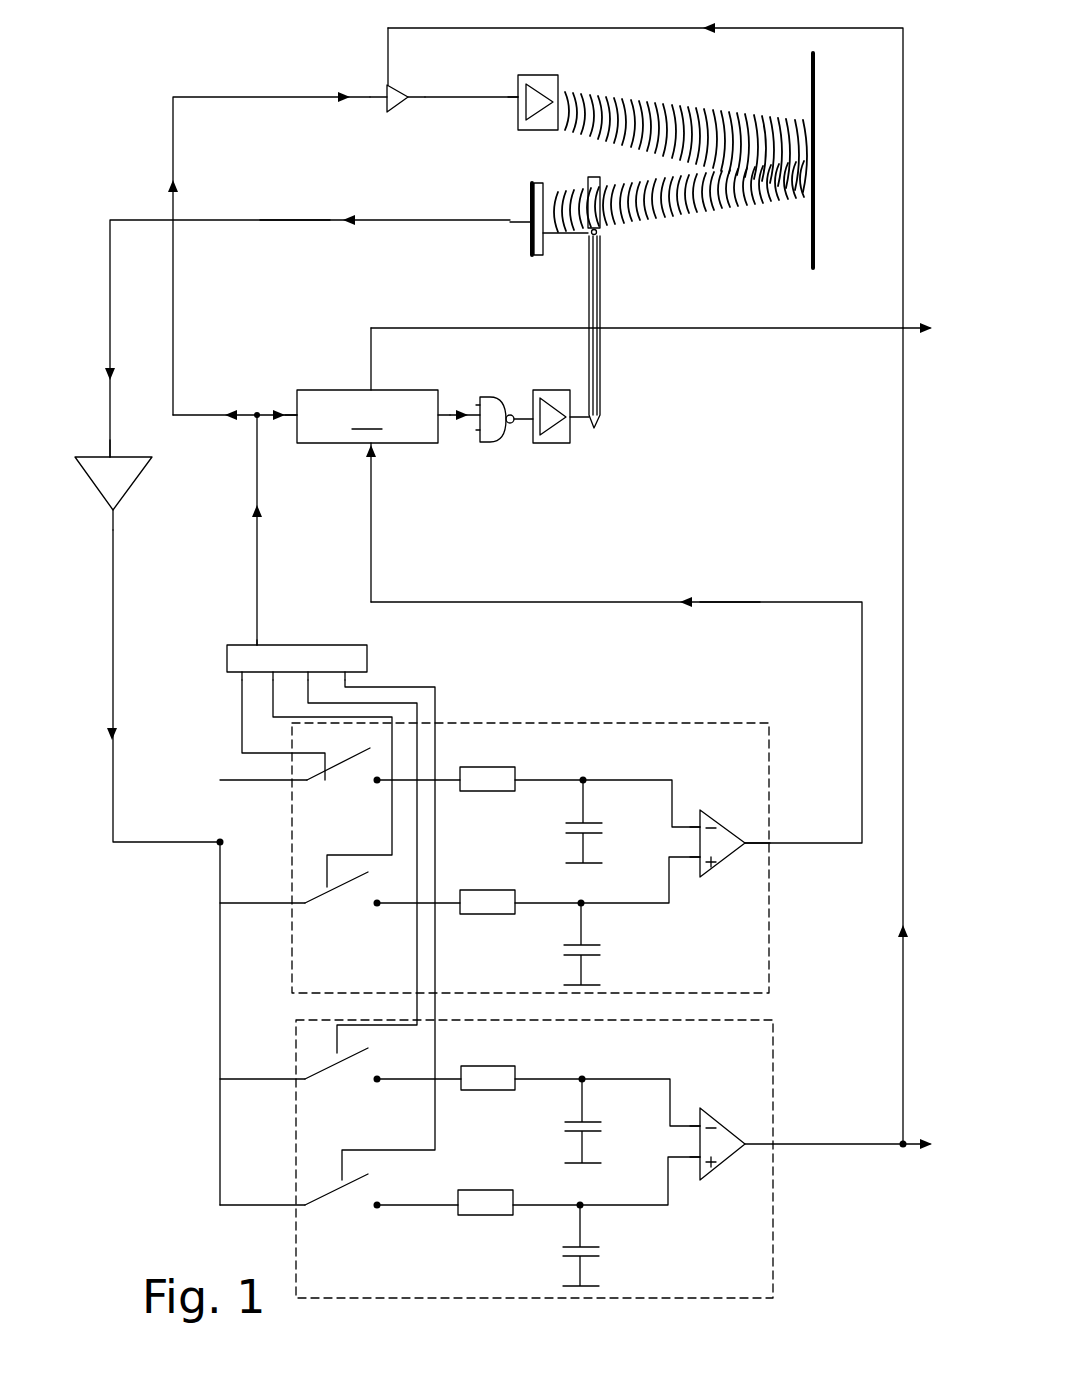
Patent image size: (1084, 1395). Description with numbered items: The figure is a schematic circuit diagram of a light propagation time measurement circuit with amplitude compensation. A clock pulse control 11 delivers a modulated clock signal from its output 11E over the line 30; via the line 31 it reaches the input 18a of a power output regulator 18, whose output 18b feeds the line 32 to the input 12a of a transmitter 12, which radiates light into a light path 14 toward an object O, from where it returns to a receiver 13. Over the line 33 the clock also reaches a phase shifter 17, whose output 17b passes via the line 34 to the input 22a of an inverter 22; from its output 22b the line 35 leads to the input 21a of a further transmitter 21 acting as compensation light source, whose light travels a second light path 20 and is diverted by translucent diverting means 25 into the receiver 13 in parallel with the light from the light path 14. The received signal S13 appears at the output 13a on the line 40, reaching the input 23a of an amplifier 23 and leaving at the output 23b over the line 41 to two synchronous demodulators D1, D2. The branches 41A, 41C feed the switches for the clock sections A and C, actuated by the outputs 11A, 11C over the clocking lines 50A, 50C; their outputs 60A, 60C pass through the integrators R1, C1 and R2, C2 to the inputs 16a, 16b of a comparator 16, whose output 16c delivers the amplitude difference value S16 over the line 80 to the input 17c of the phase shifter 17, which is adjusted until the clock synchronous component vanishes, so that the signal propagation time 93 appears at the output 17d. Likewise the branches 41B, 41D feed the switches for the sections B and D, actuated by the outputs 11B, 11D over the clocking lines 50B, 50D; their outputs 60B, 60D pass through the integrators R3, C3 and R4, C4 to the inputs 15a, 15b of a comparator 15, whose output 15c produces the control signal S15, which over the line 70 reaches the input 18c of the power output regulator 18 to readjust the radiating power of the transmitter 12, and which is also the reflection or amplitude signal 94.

The clock pulse control 11 is at (368, 660).
The output of the clock pulse control 11A is at (227, 660).
The output of the clock pulse control 11B is at (318, 665).
The output of the clock pulse control 11C is at (272, 675).
The output of the clock pulse control 11D is at (365, 672).
The output of the clock pulse control 11E is at (283, 645).
The transmitter 12 is at (548, 86).
The input of the transmitter 12a is at (512, 100).
The receiver 13 is at (531, 186).
The output of the receiver 13a is at (530, 222).
The light path 14 is at (688, 110).
The comparator 15 is at (725, 1135).
The input of the comparator 15a is at (700, 1108).
The input of the comparator 15b is at (700, 1168).
The output of the comparator 15c is at (750, 1143).
The comparator 16 is at (725, 835).
The input of the comparator 16a is at (700, 815).
The input of the comparator 16b is at (700, 868).
The output of the comparator 16c is at (750, 848).
The phase shifter 17 is at (297, 400).
The output of the phase shifter 17b is at (440, 425).
The input of the phase shifter 17c is at (378, 450).
The output of the phase shifter 17d is at (371, 385).
The power output regulator 18 is at (395, 85).
The input of the power output regulator 18a is at (386, 96).
The output of the power output regulator 18b is at (412, 104).
The input of the power output regulator 18c is at (388, 84).
The second light path 20 is at (588, 430).
The further transmitter 21 is at (550, 445).
The input of the further transmitter 21a is at (522, 425).
The inverter 22 is at (495, 397).
The input of the inverter 22a is at (480, 400).
The output of the inverter 22b is at (490, 440).
The amplifier 23 is at (135, 467).
The input of the amplifier 23a is at (112, 445).
The output of the amplifier 23b is at (115, 515).
The diverting means 25 is at (602, 270).
The line 30 is at (258, 485).
The line 31 is at (257, 100).
The line 32 is at (465, 97).
The line 33 is at (270, 413).
The line 34 is at (455, 412).
The line 35 is at (512, 412).
The line 40 is at (320, 220).
The line 41 is at (135, 840).
The line 41A is at (232, 782).
The line 41B is at (232, 1080).
The line 41C is at (232, 905).
The line 41D is at (232, 1205).
The clocking line 50A is at (242, 745).
The clocking line 50B is at (400, 1025).
The clocking line 50C is at (385, 855).
The clocking line 50D is at (437, 1130).
The line 60A is at (445, 782).
The line 60B is at (445, 1080).
The line 60C is at (445, 905).
The line 60D is at (440, 1210).
The line 70 is at (902, 300).
The line 80 is at (525, 600).
The signal propagation time 93 is at (915, 332).
The signal for the reflection or the amplitude 94 is at (915, 1150).
The integrator resistor R1 is at (485, 775).
The integrator resistor R2 is at (495, 900).
The integrator resistor R3 is at (505, 1080).
The integrator resistor R4 is at (480, 1200).
The integrator capacitor C1 is at (600, 828).
The integrator capacitor C2 is at (600, 948).
The integrator capacitor C3 is at (600, 1130).
The integrator capacitor C4 is at (600, 1248).
The synchronous demodulator D1 is at (770, 1283).
The synchronous demodulator D2 is at (607, 724).
The received signal S13 is at (272, 220).
The control signal S15 is at (902, 465).
The amplitude difference value S16 is at (710, 600).
The object O is at (812, 240).
The clock section A is at (344, 757).
The clock section B is at (343, 1064).
The clock section C is at (343, 886).
The clock section D is at (343, 1190).